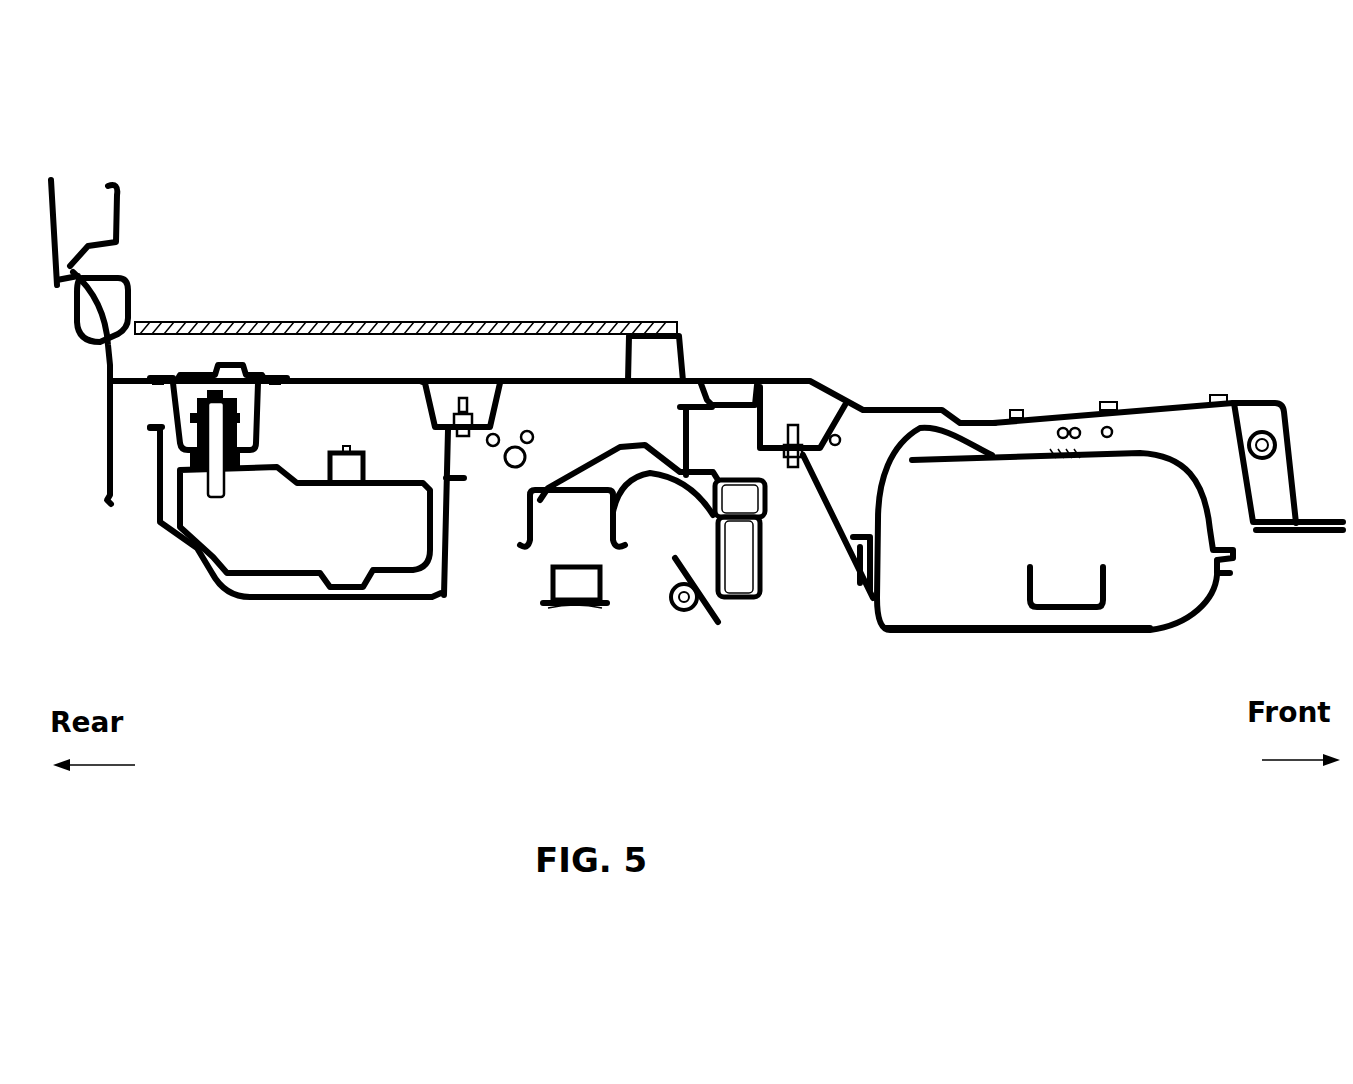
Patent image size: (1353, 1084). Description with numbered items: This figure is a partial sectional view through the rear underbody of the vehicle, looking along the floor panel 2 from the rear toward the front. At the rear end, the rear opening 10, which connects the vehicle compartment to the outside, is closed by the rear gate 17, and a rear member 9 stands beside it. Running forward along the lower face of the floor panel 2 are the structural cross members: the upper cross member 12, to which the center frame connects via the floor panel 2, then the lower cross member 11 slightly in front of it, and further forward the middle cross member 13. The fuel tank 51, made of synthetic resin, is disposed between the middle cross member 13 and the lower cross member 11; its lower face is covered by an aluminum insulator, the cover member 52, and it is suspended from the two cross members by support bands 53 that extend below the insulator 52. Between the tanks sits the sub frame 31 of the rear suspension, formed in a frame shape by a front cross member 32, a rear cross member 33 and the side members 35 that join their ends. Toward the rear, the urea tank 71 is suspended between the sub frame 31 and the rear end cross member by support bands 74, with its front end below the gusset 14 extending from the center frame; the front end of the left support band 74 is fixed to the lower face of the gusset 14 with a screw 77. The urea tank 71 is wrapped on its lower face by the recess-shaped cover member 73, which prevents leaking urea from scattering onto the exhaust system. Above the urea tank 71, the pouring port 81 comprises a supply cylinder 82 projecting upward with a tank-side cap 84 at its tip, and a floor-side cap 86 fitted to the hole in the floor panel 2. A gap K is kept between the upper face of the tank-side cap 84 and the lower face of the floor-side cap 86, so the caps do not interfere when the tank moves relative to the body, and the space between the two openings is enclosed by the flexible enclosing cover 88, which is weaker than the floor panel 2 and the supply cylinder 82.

The floor panel 2 is at (787, 378).
The rear rail 9 is at (102, 371).
The rear opening 10 is at (72, 287).
The lower cross member 11 is at (838, 427).
The cross member 12 is at (690, 357).
The middle cross member 13 is at (1283, 417).
The gusset 14 is at (498, 407).
The rear gate 17 is at (120, 220).
The sub frame 31 is at (620, 564).
The front cross member 32 is at (768, 507).
The rear cross member 33 is at (530, 520).
The side member 35 is at (637, 492).
The fuel tank 51 is at (1138, 452).
The cover member 52 is at (1174, 632).
The support band 53 is at (828, 528).
The urea tank 71 is at (308, 575).
The cover member 73 is at (387, 592).
The support band 74 is at (447, 458).
The screw 77 is at (468, 412).
The pouring port 81 is at (212, 370).
The supply cylinder 82 is at (232, 438).
The cap 84 is at (198, 398).
The cap 86 is at (228, 363).
The enclosing cover 88 is at (170, 398).
The gap K is at (218, 385).